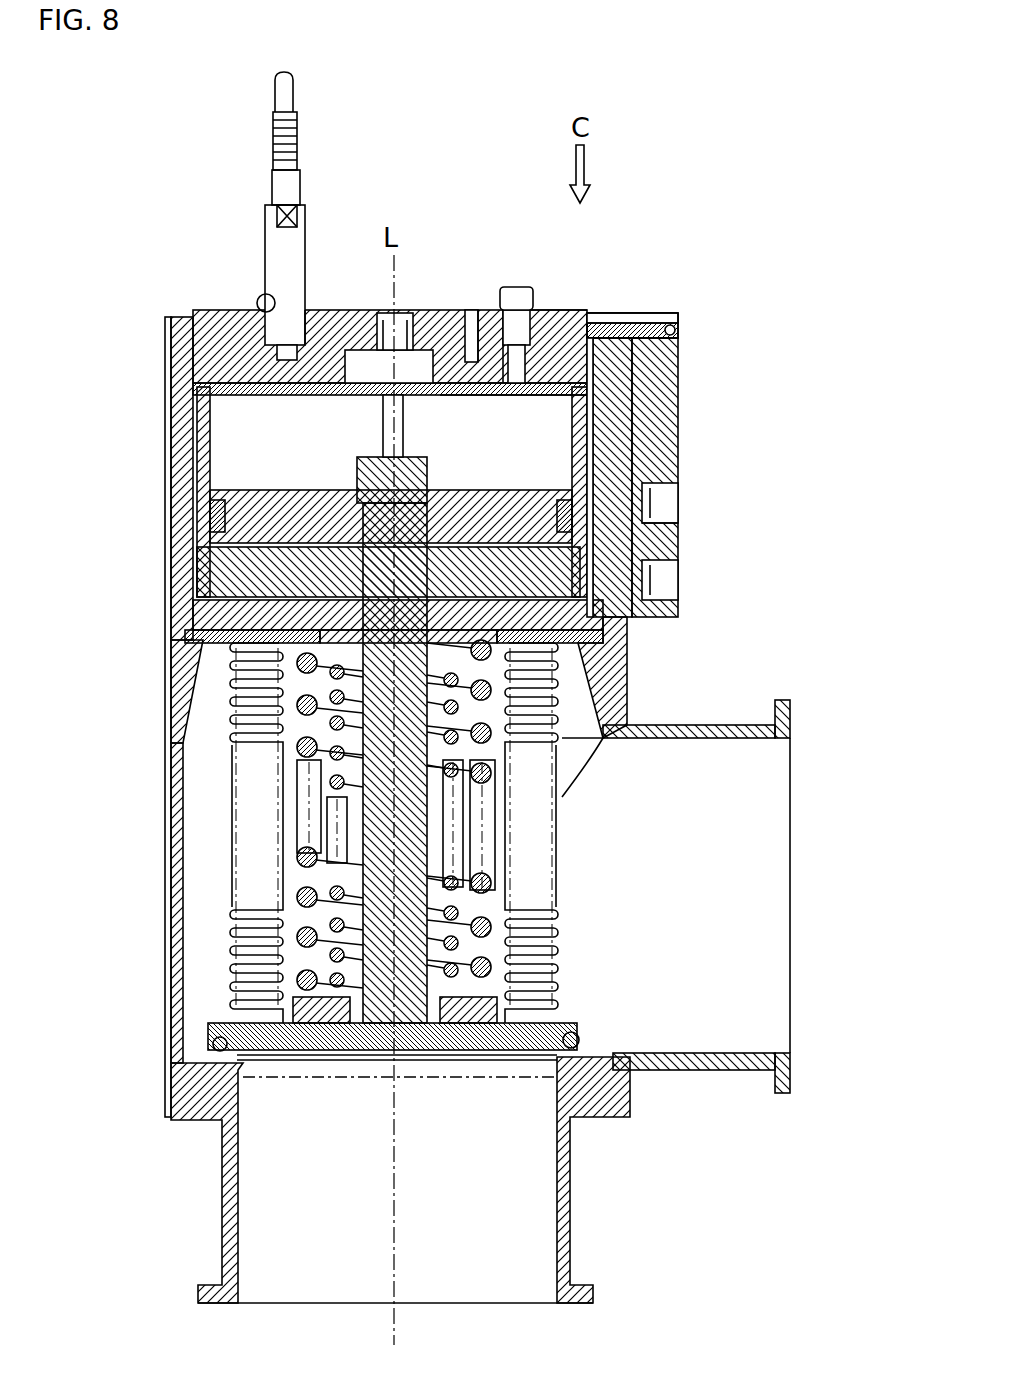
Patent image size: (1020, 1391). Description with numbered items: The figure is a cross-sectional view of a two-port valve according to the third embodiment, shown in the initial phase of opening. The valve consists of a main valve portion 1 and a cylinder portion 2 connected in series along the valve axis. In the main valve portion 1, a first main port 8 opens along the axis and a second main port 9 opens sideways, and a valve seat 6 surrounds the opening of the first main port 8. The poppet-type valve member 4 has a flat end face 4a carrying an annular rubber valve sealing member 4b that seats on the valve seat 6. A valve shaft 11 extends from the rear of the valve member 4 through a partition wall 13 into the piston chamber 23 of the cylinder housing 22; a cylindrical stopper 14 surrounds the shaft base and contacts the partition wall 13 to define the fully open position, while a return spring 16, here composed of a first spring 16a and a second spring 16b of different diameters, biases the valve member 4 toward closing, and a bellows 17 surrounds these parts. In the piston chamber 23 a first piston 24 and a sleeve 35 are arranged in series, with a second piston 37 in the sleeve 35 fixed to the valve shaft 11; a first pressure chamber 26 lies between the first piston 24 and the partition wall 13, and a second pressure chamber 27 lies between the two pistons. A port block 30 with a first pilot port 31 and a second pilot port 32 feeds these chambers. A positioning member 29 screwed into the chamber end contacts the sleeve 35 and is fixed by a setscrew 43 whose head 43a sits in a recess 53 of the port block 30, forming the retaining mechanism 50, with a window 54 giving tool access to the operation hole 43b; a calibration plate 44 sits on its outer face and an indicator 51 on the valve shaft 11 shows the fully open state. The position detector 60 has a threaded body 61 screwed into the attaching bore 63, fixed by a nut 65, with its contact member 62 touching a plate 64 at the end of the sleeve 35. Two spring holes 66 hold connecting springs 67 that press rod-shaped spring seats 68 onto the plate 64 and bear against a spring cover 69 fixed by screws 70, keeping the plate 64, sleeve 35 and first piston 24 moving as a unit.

The main valve portion 1 is at (130, 1030).
The cylinder portion 2 is at (146, 294).
The valve member 4 is at (300, 1052).
The end face 4a is at (367, 1073).
The valve sealing member 4b is at (222, 1063).
The valve seat 6 is at (567, 1030).
The first main port 8 is at (497, 1277).
The second main port 9 is at (758, 852).
The valve shaft 11 is at (297, 937).
The partition wall 13 is at (627, 677).
The stopper 14 is at (493, 845).
The return spring 16 is at (93, 763).
The first spring 16a is at (297, 748).
The second spring 16b is at (335, 795).
The bellows 17 is at (540, 955).
The cylinder housing 22 is at (170, 333).
The piston chamber 23 is at (175, 427).
The first piston 24 is at (193, 577).
The first pressure chamber 26 is at (560, 628).
The second pressure chamber 27 is at (653, 543).
The positioning member 29 is at (342, 310).
The port block 30 is at (653, 443).
The first pilot port 31 is at (660, 582).
The second pilot port 32 is at (660, 503).
The sleeve 35 is at (197, 487).
The second piston 37 is at (200, 527).
The setscrew 43 is at (600, 312).
The head 43a is at (637, 312).
The operation hole 43b is at (650, 313).
The calibration plate 44 is at (562, 305).
The retaining mechanism 50 is at (700, 243).
The indicator 51 is at (398, 428).
The recess 53 is at (670, 360).
The window 54 is at (668, 330).
The position detector 60 is at (258, 152).
The body 61 is at (283, 247).
The contact member 62 is at (295, 397).
The attaching bore 63 is at (266, 293).
The plate 64 is at (193, 385).
The nut 65 is at (312, 300).
The spring holes 66 is at (480, 300).
The connecting spring 67 is at (487, 300).
The spring seat 68 is at (492, 390).
The spring cover 69 is at (455, 310).
The screws 70 is at (517, 288).